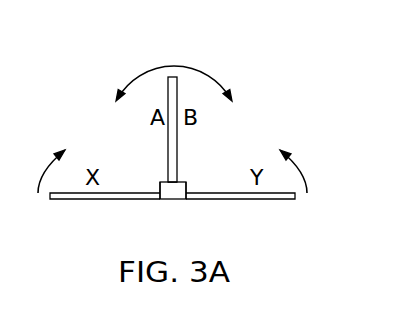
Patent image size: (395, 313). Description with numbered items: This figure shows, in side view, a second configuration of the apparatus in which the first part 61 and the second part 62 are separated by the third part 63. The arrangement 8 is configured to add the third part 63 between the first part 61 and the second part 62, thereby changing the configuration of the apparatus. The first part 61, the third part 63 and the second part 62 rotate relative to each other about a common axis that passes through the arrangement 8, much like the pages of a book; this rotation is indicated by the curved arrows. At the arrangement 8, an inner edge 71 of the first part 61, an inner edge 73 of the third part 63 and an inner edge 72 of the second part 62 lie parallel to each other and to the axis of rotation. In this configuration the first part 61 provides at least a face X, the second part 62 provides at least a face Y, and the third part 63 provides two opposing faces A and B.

The first part 61 is at (100, 200).
The second part 62 is at (267, 200).
The third part 63 is at (177, 98).
The arrangement 8 is at (172, 200).
The inner edge of the first part 71 is at (160, 186).
The inner edge of the second part 72 is at (190, 192).
The inner edge of the third part 73 is at (162, 182).